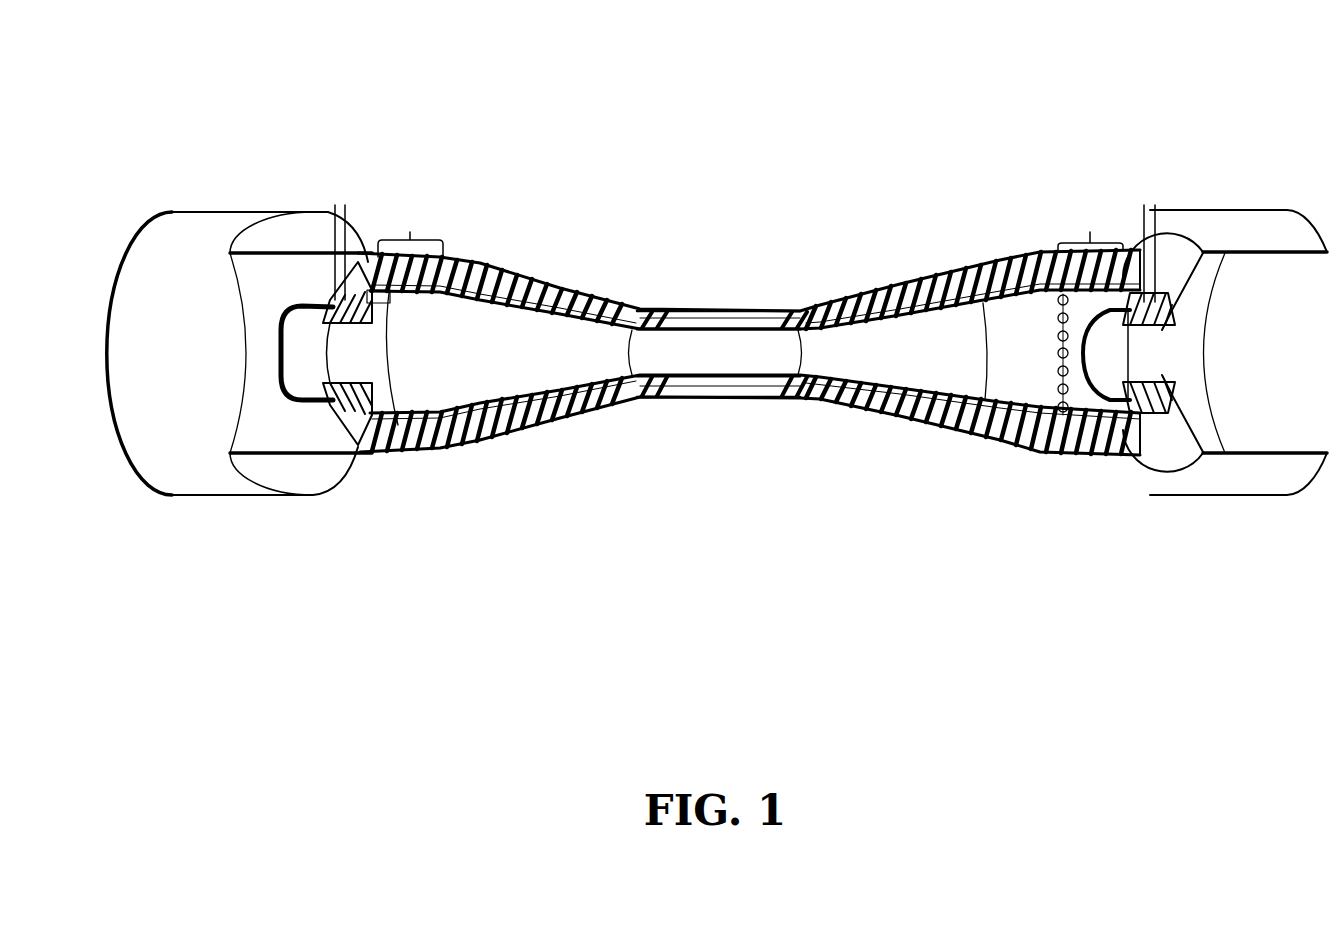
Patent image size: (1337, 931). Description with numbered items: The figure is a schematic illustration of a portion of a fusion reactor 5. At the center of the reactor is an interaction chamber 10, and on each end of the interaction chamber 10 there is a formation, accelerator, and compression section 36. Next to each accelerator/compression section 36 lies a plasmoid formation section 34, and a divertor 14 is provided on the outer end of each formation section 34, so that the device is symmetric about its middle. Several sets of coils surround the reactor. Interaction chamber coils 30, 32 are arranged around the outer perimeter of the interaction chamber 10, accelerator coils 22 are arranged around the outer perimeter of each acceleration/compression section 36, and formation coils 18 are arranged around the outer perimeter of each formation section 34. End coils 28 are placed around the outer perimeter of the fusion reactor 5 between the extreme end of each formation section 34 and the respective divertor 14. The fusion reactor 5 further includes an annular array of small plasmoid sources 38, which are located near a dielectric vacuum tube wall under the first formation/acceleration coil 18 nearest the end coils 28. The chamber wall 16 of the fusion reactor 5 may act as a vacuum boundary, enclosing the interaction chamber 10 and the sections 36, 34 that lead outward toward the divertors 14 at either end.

The fusion reactor 5 is at (693, 108).
The interaction chamber 10 is at (718, 355).
The divertor 14 is at (215, 400).
The chamber wall 16 is at (525, 432).
The formation coils 18 is at (750, 229).
The accelerator coils 22 is at (647, 311).
The end coils 28 is at (745, 240).
The interaction chamber coil 30 is at (738, 310).
The interaction chamber coil 32 is at (665, 312).
The plasmoid formation section 34 is at (362, 437).
The formation, accelerator, and compression section 36 is at (437, 375).
The plasmoid sources 38 is at (1066, 412).